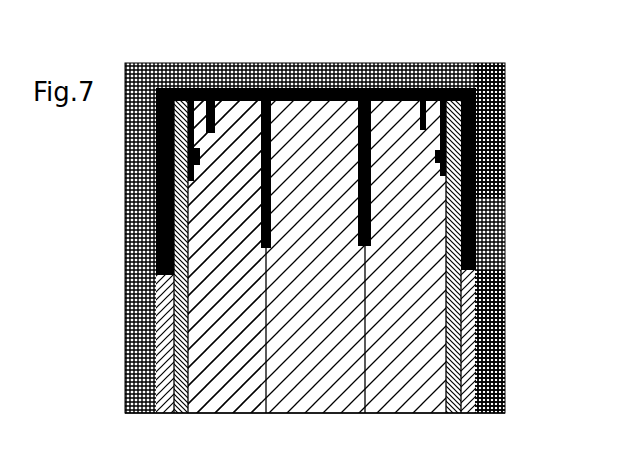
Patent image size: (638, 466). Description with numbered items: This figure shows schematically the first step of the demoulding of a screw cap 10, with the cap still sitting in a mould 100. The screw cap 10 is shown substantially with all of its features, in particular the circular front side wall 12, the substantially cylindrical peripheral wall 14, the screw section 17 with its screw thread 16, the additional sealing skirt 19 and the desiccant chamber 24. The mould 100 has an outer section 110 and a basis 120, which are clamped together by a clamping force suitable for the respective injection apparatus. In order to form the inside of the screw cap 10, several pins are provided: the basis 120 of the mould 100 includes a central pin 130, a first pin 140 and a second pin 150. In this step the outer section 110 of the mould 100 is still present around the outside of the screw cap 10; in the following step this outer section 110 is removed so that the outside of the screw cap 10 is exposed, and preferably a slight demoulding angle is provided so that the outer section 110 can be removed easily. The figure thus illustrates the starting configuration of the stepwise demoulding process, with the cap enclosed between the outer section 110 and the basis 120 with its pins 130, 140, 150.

The screw cap 10 is at (500, 102).
The circular front side wall 12 is at (305, 58).
The additional sealing skirt 19 is at (488, 56).
The screw section 17 is at (488, 118).
The substantially cylindrical peripheral wall 14 is at (480, 153).
The screw thread 16 is at (487, 173).
The desiccant chamber 24 is at (363, 218).
The outer section 110 is at (485, 235).
The mould 100 is at (546, 270).
The basis 120 is at (483, 343).
The central pin 130 is at (293, 395).
The first pin 140 is at (172, 388).
The second pin 150 is at (208, 392).